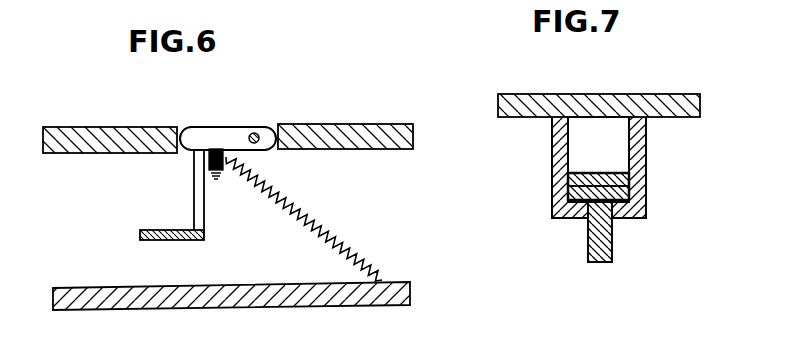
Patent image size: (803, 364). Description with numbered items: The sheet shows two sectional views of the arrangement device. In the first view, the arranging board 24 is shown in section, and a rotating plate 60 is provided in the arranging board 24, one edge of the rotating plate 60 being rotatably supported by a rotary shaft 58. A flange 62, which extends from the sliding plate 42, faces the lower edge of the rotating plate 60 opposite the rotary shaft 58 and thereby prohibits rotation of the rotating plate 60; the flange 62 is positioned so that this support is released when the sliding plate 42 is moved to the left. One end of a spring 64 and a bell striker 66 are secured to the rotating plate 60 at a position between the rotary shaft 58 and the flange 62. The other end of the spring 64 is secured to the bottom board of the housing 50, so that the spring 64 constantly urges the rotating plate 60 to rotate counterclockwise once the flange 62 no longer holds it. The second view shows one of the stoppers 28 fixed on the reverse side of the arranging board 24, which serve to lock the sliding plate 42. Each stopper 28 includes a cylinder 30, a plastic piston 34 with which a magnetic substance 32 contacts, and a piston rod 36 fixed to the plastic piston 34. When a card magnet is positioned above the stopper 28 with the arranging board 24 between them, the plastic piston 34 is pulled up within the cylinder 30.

In FIG. 6, the arranging board 24 is at (343, 124).
In FIG. 7, the arranging board 24 is at (610, 93).
In FIG. 7, the stopper 28 is at (672, 139).
In FIG. 7, the cylinder 30 is at (552, 133).
In FIG. 7, the magnetic substance 32 is at (590, 173).
In FIG. 7, the plastic piston 34 is at (630, 190).
In FIG. 7, the piston rod 36 is at (612, 240).
In FIG. 6, the sliding plate 42 is at (150, 241).
In FIG. 6, the housing 50 is at (345, 307).
In FIG. 6, the rotary shaft 58 is at (259, 134).
In FIG. 6, the rotating plate 60 is at (222, 126).
In FIG. 6, the flange 62 is at (193, 188).
In FIG. 6, the spring 64 is at (307, 210).
In FIG. 6, the bell striker 66 is at (218, 180).